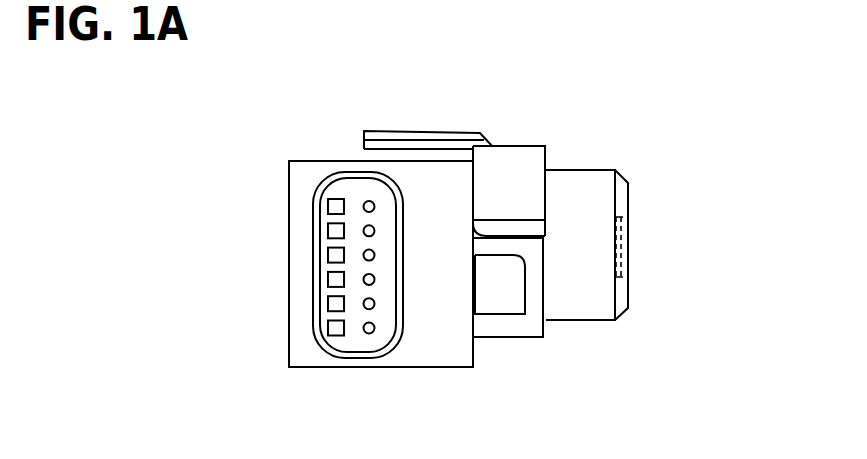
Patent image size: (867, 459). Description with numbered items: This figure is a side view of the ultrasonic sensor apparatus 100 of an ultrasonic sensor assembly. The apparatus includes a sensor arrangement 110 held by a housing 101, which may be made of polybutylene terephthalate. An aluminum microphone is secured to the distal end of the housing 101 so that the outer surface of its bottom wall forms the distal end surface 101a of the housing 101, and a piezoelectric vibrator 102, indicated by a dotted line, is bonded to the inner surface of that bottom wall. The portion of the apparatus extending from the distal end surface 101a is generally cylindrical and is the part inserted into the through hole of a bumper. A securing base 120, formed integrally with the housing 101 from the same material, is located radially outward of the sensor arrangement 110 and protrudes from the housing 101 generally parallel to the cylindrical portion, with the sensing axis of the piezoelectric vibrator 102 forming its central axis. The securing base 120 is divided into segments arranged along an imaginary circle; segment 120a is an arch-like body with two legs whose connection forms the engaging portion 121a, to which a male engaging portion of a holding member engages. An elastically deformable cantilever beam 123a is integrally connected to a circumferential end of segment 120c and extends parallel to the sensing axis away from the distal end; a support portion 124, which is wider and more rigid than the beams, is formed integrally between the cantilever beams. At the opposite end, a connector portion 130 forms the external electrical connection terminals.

The ultrasonic sensor apparatus 100 is at (645, 155).
The housing 101 is at (302, 210).
The distal end surface 101a is at (629, 200).
The piezoelectric vibrator 102 is at (630, 243).
The sensor arrangement 110 is at (577, 165).
The securing base 120 is at (542, 343).
The segment 120a is at (505, 328).
The segment 120c is at (509, 177).
The engaging portion 121a is at (525, 284).
The cantilever beam 123a is at (392, 150).
The support portion 124 is at (390, 128).
The connector portion 130 is at (330, 290).